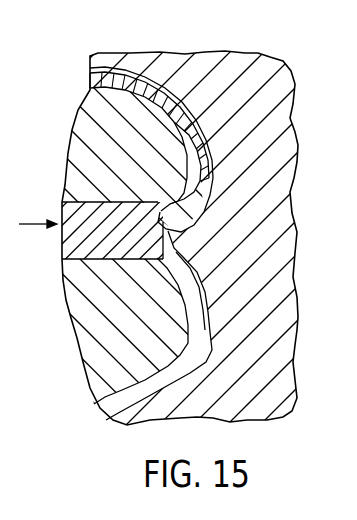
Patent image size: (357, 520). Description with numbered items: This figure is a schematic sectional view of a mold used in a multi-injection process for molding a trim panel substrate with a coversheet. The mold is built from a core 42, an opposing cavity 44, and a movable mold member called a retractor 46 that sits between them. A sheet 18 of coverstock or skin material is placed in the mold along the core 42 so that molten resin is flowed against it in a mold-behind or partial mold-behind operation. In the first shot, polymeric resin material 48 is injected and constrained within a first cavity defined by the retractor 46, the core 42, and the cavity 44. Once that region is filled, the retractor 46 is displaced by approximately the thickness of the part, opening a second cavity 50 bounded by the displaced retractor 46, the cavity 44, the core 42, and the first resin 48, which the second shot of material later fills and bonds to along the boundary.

The sheet 18 is at (183, 85).
The core 42 is at (74, 148).
The cavity 44 is at (281, 120).
The retractor 46 is at (73, 246).
The polymeric resin material 48 is at (101, 83).
The second cavity 50 is at (116, 400).